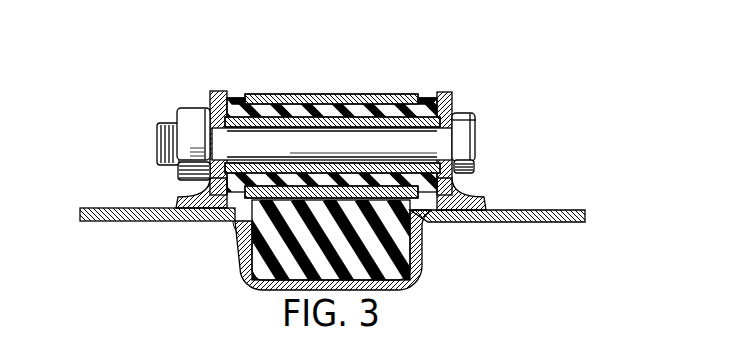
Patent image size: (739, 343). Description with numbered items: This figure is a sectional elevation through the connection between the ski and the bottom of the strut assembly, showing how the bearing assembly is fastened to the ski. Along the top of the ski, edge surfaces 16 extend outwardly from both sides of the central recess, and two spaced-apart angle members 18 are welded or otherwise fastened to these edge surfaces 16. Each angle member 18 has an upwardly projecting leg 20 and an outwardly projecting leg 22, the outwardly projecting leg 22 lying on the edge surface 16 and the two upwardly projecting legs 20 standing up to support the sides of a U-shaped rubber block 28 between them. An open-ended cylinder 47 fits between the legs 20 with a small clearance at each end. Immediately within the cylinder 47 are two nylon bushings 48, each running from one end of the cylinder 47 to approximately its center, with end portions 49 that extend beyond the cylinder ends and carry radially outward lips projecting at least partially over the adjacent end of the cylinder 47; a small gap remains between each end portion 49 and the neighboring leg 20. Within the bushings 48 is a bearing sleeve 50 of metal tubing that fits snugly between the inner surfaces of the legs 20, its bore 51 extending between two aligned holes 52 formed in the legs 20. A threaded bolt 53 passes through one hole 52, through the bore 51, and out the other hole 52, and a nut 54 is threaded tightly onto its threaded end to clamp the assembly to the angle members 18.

The edge surface 16 is at (132, 223).
The angle member 18 is at (208, 100).
The upwardly projecting leg 20 is at (208, 100).
The outwardly projecting leg 22 is at (196, 194).
The U-shaped rubber block 28 is at (388, 268).
The open-ended cylinder 47 is at (380, 97).
The nylon bushing 48 is at (350, 110).
The end portion 49 is at (233, 98).
The bearing sleeve 50 is at (234, 224).
The bore 51 is at (378, 148).
The hole 52 is at (455, 143).
The threaded bolt 53 is at (475, 122).
The nut 54 is at (178, 170).